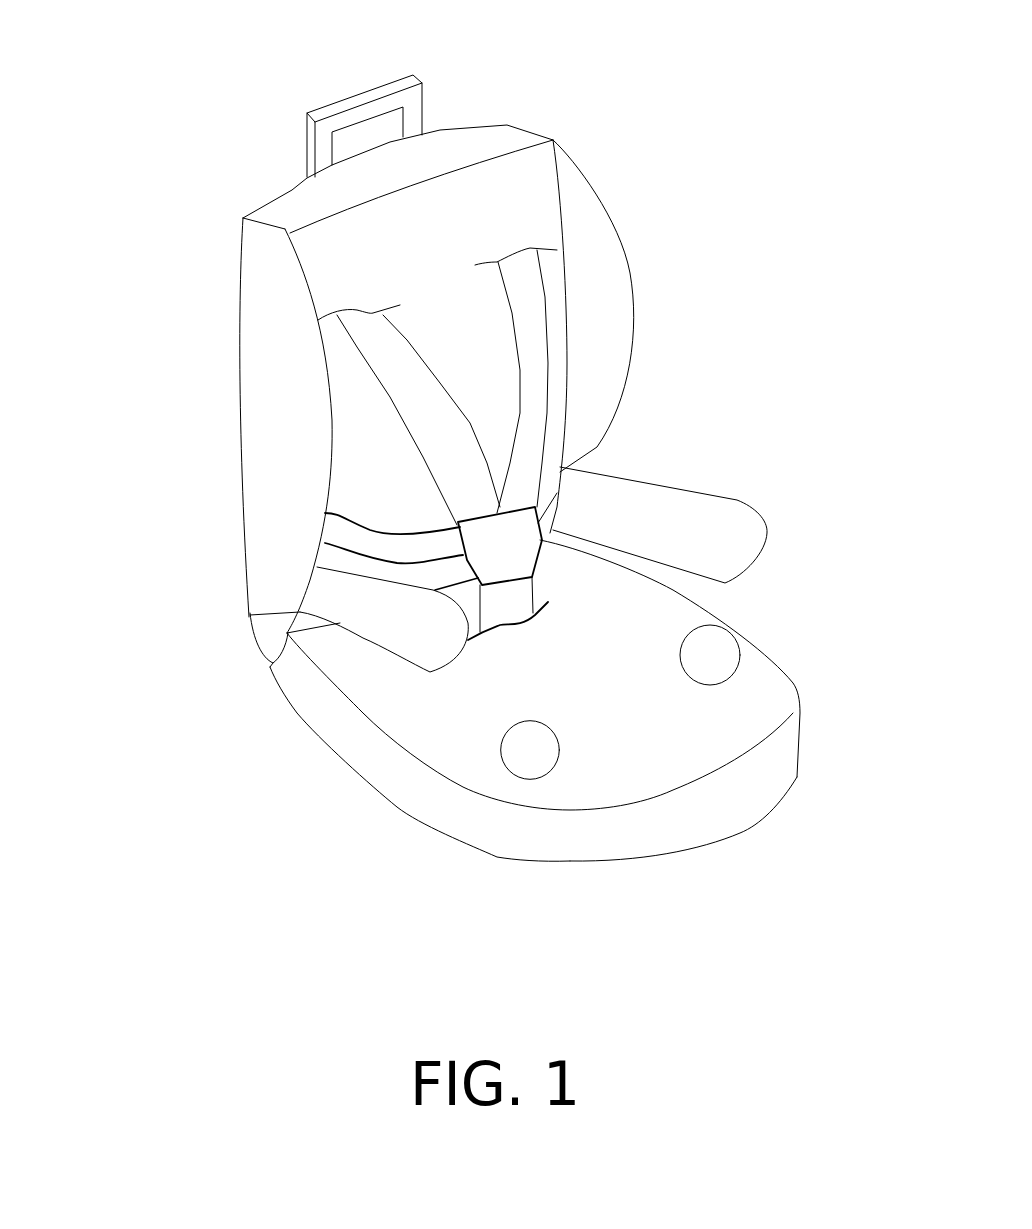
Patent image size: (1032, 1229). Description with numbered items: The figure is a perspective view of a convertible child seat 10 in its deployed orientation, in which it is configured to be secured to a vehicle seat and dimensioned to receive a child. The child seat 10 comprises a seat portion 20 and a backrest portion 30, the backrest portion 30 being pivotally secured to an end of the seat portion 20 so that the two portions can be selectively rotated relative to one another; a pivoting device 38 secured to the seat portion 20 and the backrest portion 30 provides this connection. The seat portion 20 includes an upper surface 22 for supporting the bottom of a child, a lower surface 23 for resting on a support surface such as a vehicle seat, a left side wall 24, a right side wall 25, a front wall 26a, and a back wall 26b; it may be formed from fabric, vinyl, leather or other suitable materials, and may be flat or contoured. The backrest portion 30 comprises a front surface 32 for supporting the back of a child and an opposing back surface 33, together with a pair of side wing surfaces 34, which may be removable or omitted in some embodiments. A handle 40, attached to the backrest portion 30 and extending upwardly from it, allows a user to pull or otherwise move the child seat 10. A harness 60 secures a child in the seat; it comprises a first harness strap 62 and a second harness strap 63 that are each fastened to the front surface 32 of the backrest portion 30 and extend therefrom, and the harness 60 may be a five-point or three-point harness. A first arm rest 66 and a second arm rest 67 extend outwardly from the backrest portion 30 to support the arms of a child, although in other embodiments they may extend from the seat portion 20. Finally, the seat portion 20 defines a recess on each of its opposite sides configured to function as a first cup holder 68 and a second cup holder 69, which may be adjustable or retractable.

The convertible child seat 10 is at (250, 69).
The seat portion 20 is at (821, 649).
The upper surface 22 is at (730, 728).
The lower surface 23 is at (467, 833).
The left side wall 24 is at (363, 733).
The right side wall 25 is at (673, 588).
The front wall 26a is at (730, 792).
The back wall 26b is at (242, 620).
The backrest portion 30 is at (210, 351).
The front surface 32 is at (530, 222).
The back surface 33 is at (237, 275).
The side wing surfaces 34 is at (305, 405).
The pivoting device 38 is at (260, 637).
The handle 40 is at (457, 87).
The harness 60 is at (564, 479).
The first harness strap 62 is at (433, 423).
The second harness strap 63 is at (533, 362).
The first arm rest 66 is at (402, 627).
The second arm rest 67 is at (673, 512).
The first cup holder 68 is at (520, 747).
The second cup holder 69 is at (710, 640).